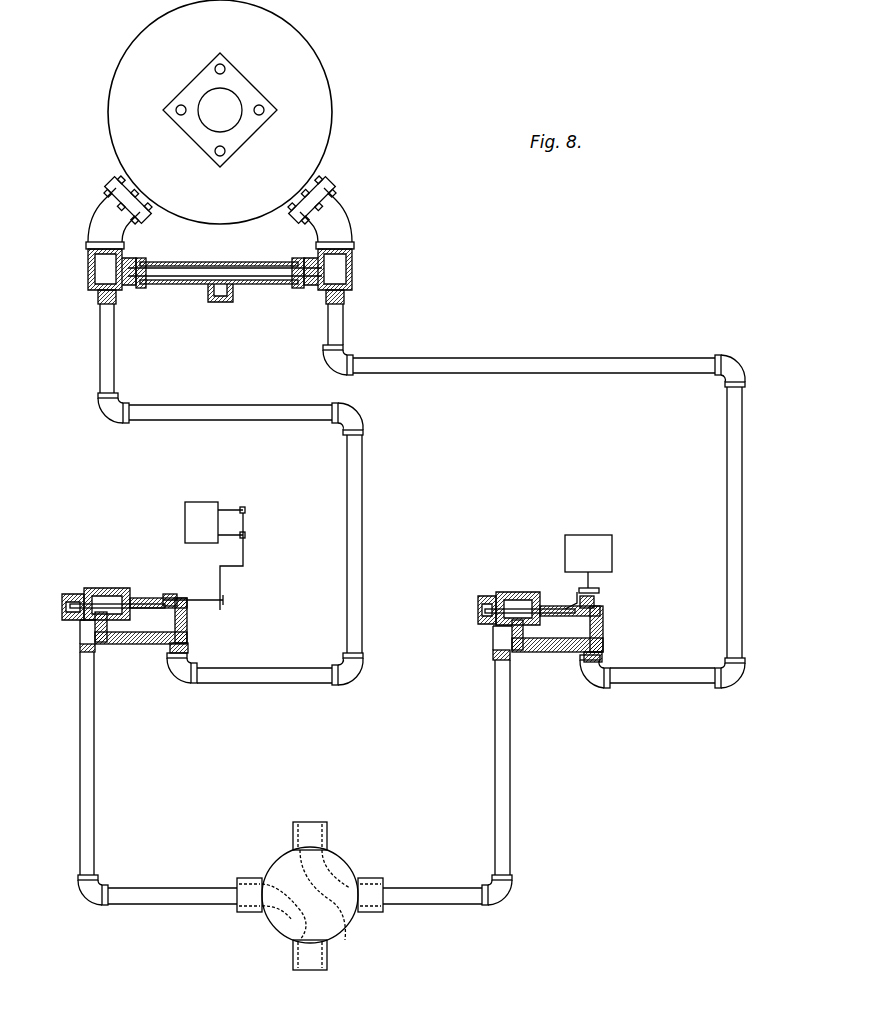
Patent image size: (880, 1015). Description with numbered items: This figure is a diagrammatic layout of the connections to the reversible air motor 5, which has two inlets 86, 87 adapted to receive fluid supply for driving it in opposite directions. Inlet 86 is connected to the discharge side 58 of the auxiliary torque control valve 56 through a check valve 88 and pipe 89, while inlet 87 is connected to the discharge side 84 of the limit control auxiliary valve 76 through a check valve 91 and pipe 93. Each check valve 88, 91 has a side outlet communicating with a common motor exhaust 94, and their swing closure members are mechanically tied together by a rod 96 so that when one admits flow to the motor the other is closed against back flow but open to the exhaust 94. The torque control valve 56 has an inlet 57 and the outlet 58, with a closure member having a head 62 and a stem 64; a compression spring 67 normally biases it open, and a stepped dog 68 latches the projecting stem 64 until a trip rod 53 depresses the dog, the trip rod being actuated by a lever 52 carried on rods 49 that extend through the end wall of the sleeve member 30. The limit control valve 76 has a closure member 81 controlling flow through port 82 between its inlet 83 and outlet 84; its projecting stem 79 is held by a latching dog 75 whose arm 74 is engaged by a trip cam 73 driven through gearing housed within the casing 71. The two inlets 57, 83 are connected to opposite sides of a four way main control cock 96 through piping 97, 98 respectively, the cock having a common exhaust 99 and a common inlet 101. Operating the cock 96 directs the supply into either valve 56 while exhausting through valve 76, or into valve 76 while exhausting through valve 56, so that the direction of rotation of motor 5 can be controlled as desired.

The motor 5 is at (318, 95).
The sleeve member 30 is at (200, 502).
The rods 49 is at (236, 510).
The lever 52 is at (244, 556).
The trip rod 53 is at (212, 600).
The valve body 56 is at (84, 590).
The inlet 57 is at (80, 636).
The outlet 58 is at (193, 641).
The head 62 is at (100, 593).
The stem 64 is at (140, 600).
The compression spring 67 is at (113, 645).
The stepped dog 68 is at (170, 596).
The casing 71 is at (605, 546).
The trip cam 73 is at (600, 590).
The arm 74 is at (574, 596).
The latching dog 75 is at (556, 630).
The second auxiliary valve body 76 is at (496, 594).
The stem 79 is at (545, 628).
The closure member 81 is at (516, 596).
The port 82 is at (492, 626).
The inlet 83 is at (494, 658).
The outlet 84 is at (604, 641).
The inlet 86 is at (96, 232).
The inlet 87 is at (344, 212).
The check valve 88 is at (90, 276).
The pipe 89 is at (101, 362).
The check valve 91 is at (354, 273).
The pipe 93 is at (486, 358).
The common motor exhaust 94 is at (226, 302).
The rod / four way main control cock 96 is at (180, 263).
The piping 97 is at (95, 812).
The piping 98 is at (496, 745).
The common exhaust 99 is at (318, 826).
The common inlet 101 is at (328, 963).